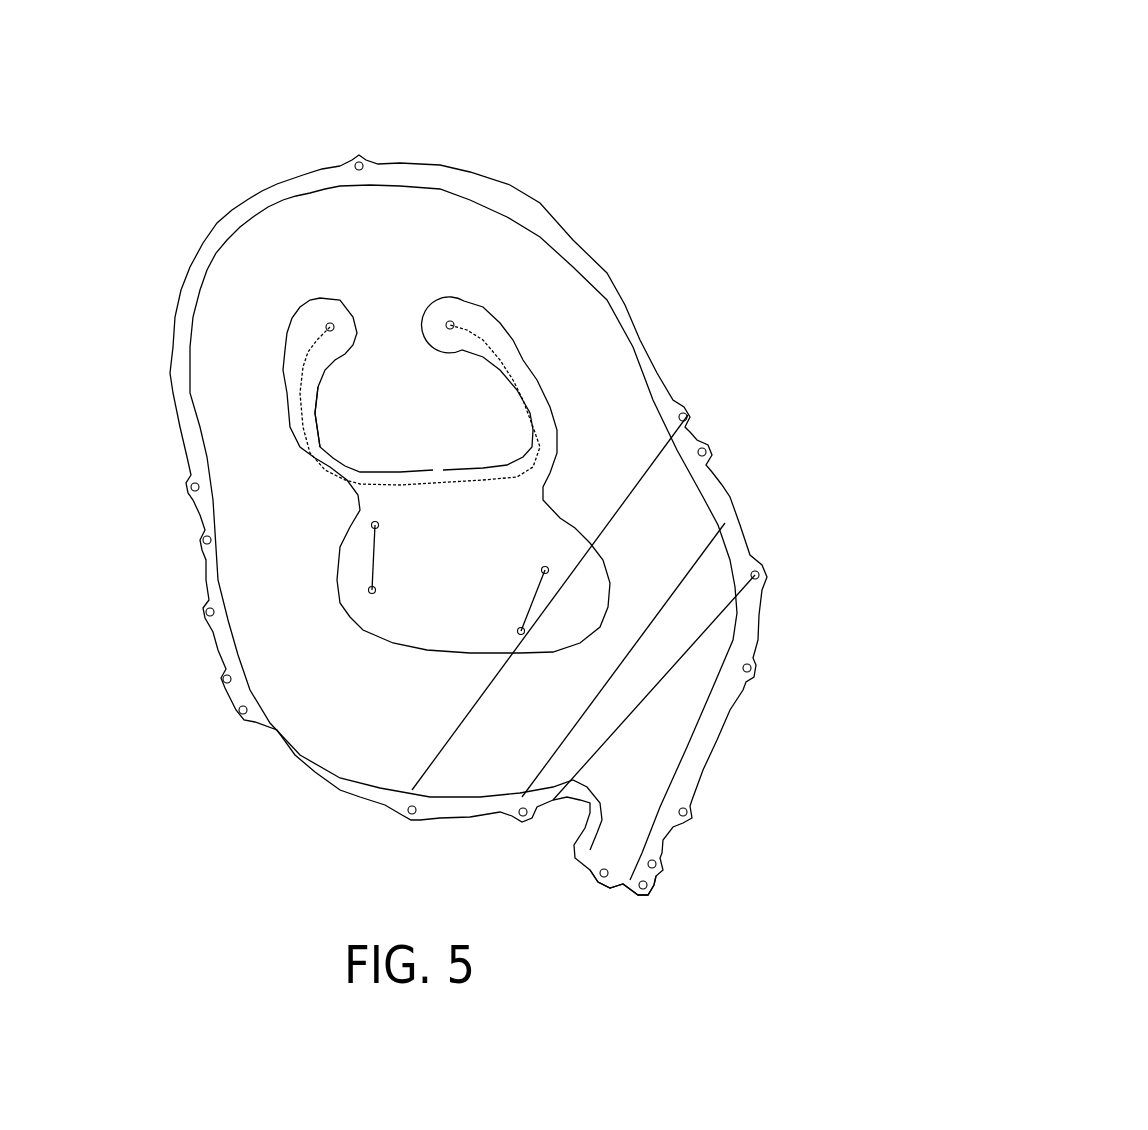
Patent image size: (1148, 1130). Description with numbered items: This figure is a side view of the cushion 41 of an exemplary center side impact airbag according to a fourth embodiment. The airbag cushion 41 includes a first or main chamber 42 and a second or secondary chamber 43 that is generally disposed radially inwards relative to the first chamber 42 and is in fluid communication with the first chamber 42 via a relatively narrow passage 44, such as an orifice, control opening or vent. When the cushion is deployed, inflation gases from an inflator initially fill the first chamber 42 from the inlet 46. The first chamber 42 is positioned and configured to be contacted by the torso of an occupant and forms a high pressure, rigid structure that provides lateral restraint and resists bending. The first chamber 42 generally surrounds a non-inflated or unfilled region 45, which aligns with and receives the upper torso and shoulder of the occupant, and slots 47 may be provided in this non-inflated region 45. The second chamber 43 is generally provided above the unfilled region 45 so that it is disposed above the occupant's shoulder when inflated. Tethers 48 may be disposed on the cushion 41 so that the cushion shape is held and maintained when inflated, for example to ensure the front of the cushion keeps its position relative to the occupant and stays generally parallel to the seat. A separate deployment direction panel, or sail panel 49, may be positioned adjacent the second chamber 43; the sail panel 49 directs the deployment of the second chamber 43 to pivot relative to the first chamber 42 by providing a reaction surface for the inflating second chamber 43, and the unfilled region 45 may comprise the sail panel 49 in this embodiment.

The cushion 41 is at (642, 112).
The first chamber 42 is at (238, 435).
The second chamber 43 is at (460, 401).
The passage 44 is at (378, 319).
The non-inflated region 45 is at (525, 525).
The inlet 46 is at (637, 855).
The slots 47 is at (525, 602).
The tethers 48 is at (650, 472).
The sail panel 49 is at (323, 450).